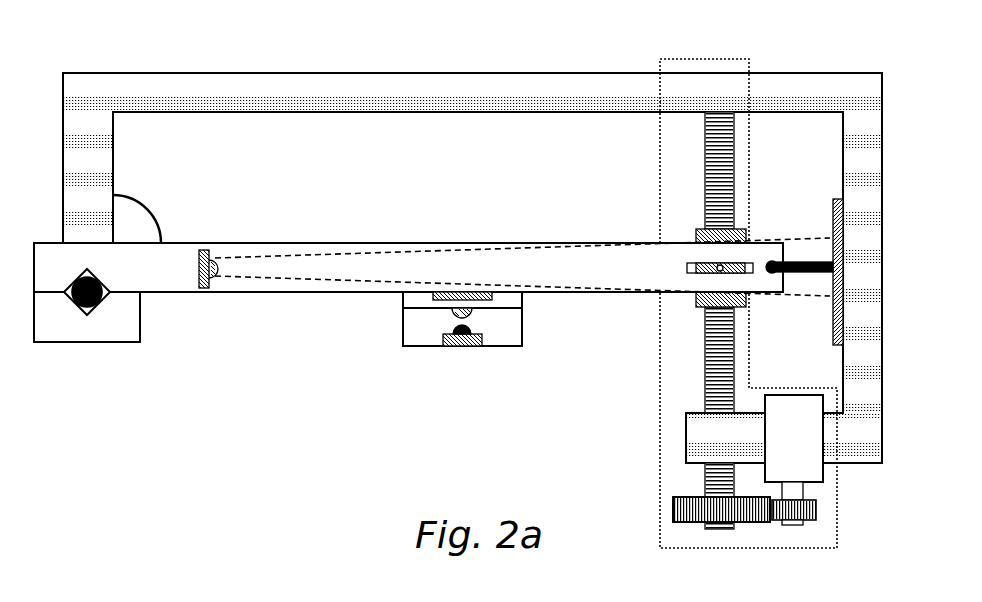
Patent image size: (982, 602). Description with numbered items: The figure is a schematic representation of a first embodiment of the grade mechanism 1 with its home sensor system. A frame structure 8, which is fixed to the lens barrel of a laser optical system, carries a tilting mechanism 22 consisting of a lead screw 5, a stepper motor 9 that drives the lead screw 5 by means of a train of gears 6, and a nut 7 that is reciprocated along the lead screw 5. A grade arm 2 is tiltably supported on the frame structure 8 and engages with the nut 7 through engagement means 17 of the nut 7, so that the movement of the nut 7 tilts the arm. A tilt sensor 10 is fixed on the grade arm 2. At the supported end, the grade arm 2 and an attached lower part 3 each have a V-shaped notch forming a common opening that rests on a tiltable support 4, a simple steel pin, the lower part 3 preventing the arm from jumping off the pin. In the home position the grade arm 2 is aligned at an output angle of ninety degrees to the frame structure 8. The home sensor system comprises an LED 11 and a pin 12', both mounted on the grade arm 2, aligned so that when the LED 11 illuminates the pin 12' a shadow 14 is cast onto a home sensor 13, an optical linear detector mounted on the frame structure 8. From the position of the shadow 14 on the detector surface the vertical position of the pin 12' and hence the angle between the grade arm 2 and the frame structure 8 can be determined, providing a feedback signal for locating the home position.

The grade mechanism 1 is at (412, 55).
The grade arm 2 is at (187, 250).
The lower part 3 is at (125, 325).
The tiltable support 4 is at (87, 295).
The lead screw 5 is at (718, 122).
The train of gears 6 is at (708, 510).
The nut 7 is at (703, 229).
The frame structure 8 is at (528, 97).
The stepper motor 9 is at (808, 453).
The tilt sensor 10 is at (412, 368).
The LED 11 is at (210, 282).
The pin 12' is at (803, 223).
The home sensor 13 is at (838, 345).
The shadow 14 is at (817, 274).
The engagement means 17 is at (719, 272).
The tilting mechanism 22 is at (660, 412).